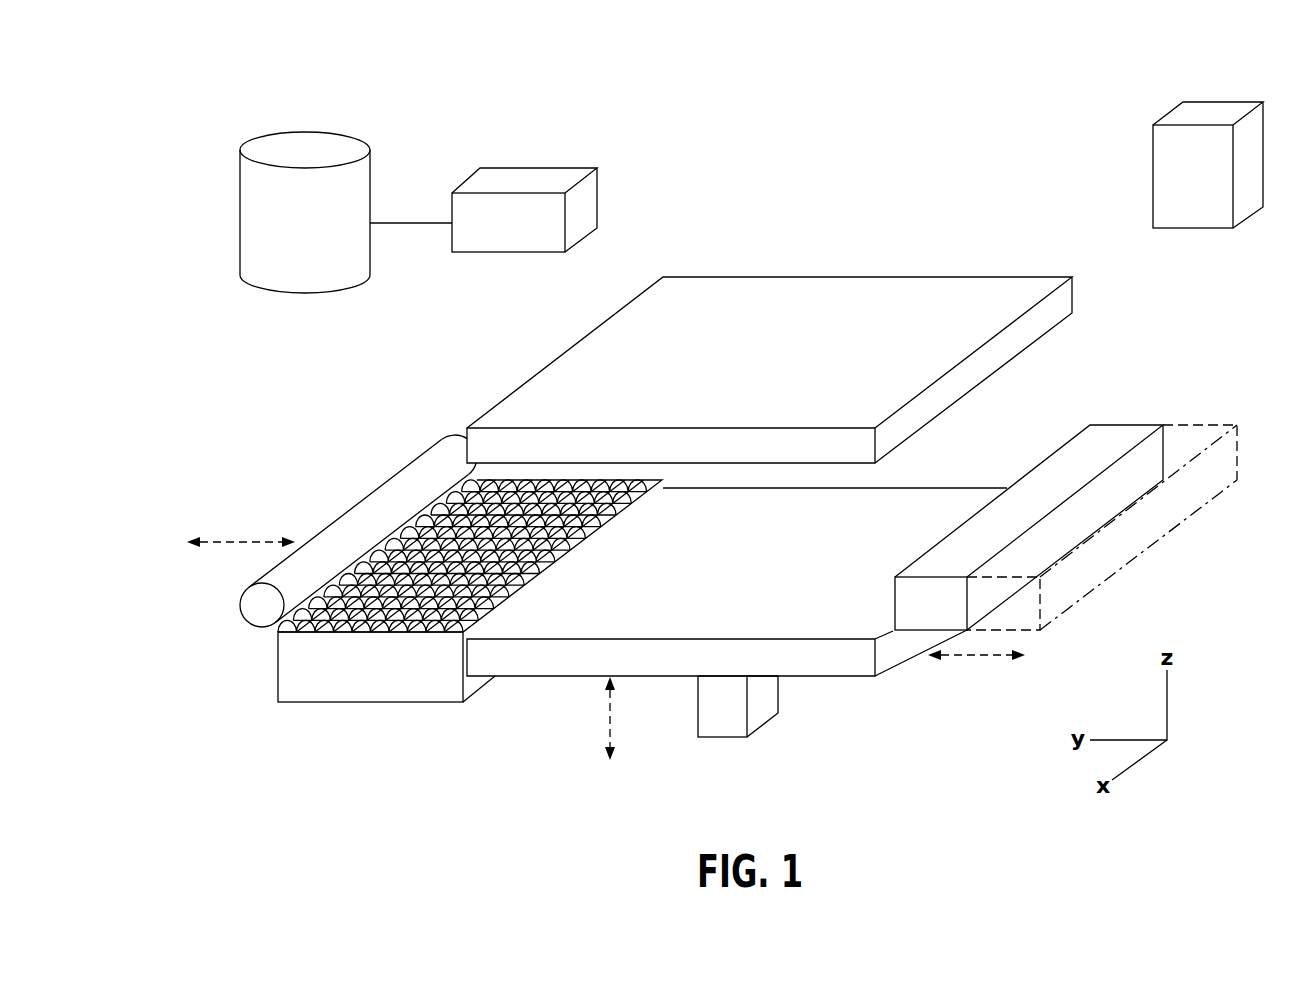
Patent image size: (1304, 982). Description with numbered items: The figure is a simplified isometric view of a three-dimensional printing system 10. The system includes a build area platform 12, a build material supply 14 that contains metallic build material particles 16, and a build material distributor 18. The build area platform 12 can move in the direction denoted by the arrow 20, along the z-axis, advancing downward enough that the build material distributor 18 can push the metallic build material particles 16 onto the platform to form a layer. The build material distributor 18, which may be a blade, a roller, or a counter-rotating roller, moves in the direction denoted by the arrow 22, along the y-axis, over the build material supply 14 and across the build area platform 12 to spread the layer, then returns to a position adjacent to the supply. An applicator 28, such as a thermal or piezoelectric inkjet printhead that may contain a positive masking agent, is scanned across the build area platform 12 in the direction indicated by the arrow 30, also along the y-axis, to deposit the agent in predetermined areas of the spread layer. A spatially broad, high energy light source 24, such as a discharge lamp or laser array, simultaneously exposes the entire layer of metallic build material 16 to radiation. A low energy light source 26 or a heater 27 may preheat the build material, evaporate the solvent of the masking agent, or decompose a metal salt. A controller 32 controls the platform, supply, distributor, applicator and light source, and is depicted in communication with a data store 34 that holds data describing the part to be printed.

The printing system 10 is at (382, 92).
The build area platform 12 is at (833, 677).
The build material supply 14 is at (367, 702).
The metallic build material particles 16 is at (313, 628).
The build material distributor 18 is at (357, 495).
The arrow 20 is at (610, 708).
The arrow 22 is at (233, 542).
The spatially broad, high energy light source 24 is at (997, 277).
The low energy light source 26 is at (1220, 425).
The heater 27 is at (1192, 195).
The applicator 28 is at (1127, 425).
The arrow 30 is at (993, 658).
The controller 32 is at (528, 168).
The data store 34 is at (275, 213).